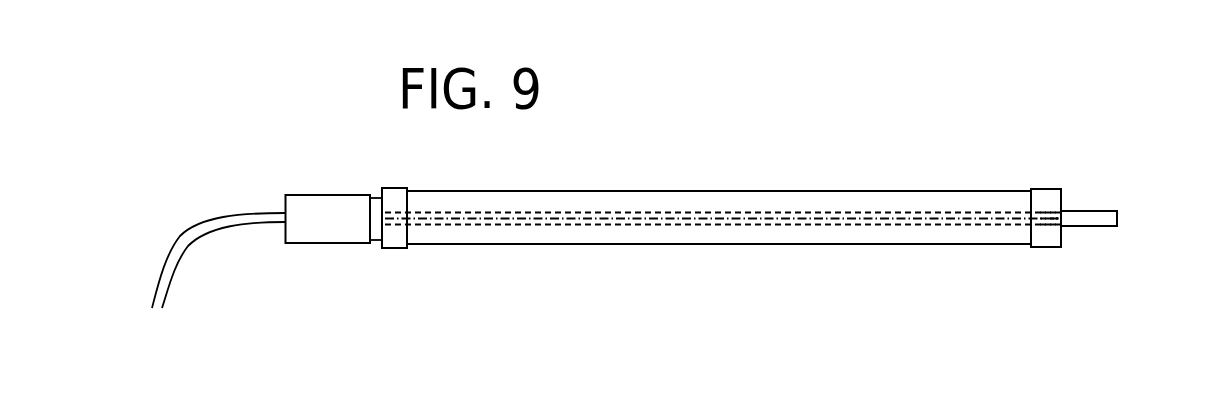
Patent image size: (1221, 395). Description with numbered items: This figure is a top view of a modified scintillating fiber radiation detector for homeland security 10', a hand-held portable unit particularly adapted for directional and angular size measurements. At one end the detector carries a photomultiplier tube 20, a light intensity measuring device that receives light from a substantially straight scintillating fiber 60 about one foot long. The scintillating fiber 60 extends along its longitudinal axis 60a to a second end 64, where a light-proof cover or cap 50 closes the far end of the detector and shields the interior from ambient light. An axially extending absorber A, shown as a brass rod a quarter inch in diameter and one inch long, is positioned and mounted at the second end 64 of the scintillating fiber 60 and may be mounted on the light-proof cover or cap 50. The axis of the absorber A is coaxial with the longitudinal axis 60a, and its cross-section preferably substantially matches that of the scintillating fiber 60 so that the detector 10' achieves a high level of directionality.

The scintillating fiber radiation detector for homeland security 10' is at (653, 217).
The photomultiplier tube 20 is at (320, 218).
The light-proof cover or cap 50 is at (1045, 202).
The scintillating fiber 60 is at (708, 217).
The longitudinal axis 60a is at (797, 222).
The second end 64 is at (1032, 218).
The absorber A is at (1093, 218).